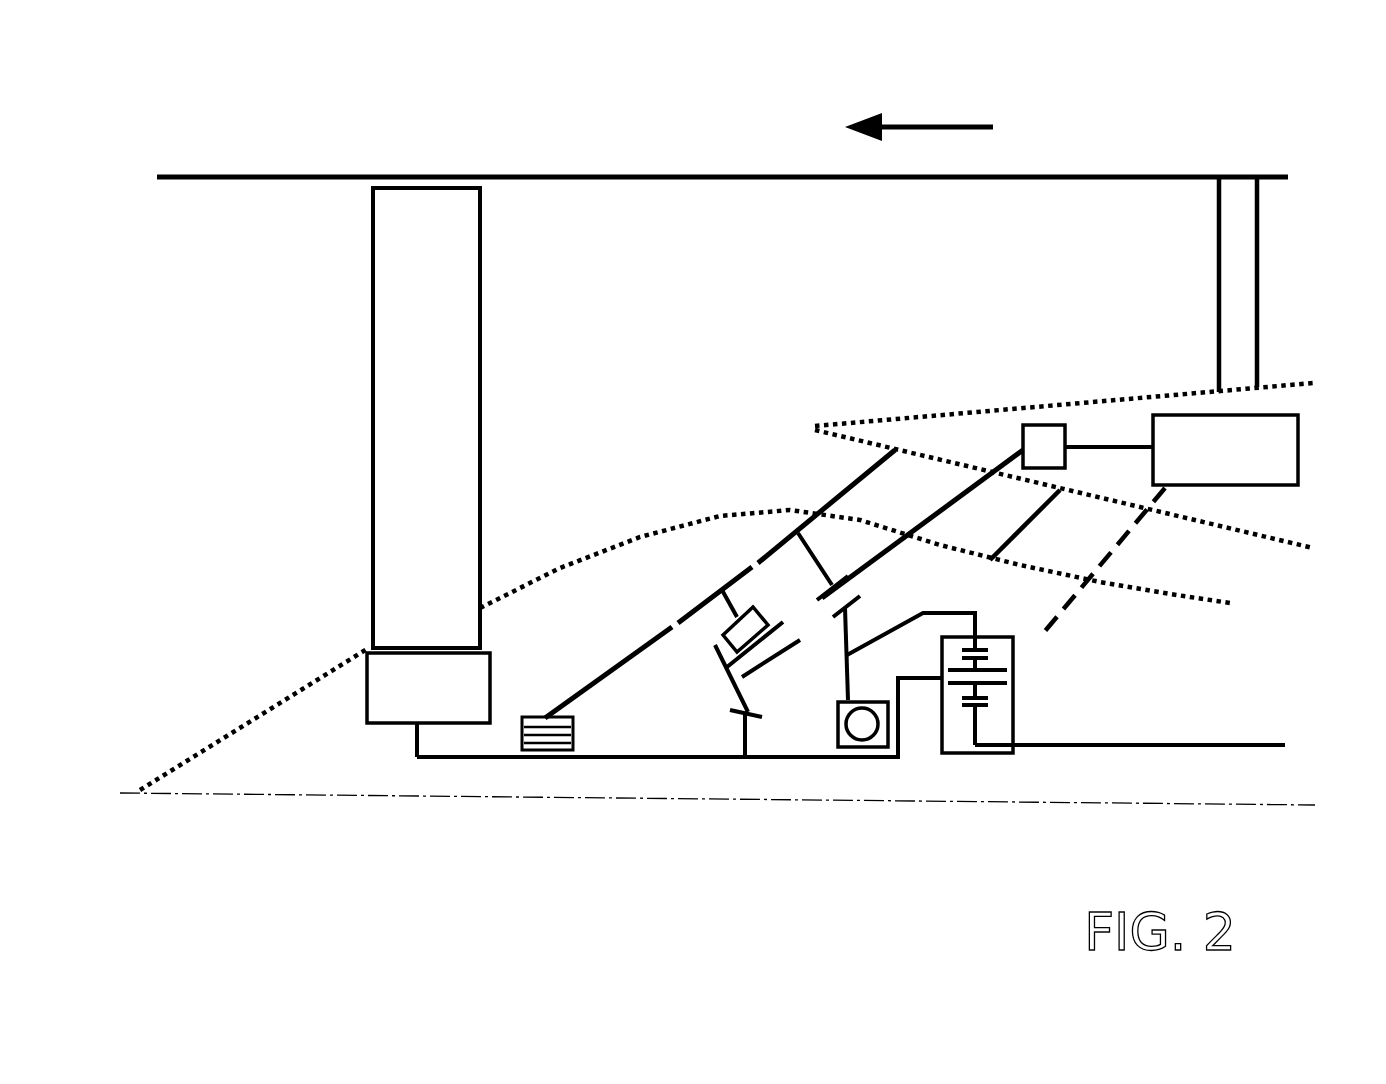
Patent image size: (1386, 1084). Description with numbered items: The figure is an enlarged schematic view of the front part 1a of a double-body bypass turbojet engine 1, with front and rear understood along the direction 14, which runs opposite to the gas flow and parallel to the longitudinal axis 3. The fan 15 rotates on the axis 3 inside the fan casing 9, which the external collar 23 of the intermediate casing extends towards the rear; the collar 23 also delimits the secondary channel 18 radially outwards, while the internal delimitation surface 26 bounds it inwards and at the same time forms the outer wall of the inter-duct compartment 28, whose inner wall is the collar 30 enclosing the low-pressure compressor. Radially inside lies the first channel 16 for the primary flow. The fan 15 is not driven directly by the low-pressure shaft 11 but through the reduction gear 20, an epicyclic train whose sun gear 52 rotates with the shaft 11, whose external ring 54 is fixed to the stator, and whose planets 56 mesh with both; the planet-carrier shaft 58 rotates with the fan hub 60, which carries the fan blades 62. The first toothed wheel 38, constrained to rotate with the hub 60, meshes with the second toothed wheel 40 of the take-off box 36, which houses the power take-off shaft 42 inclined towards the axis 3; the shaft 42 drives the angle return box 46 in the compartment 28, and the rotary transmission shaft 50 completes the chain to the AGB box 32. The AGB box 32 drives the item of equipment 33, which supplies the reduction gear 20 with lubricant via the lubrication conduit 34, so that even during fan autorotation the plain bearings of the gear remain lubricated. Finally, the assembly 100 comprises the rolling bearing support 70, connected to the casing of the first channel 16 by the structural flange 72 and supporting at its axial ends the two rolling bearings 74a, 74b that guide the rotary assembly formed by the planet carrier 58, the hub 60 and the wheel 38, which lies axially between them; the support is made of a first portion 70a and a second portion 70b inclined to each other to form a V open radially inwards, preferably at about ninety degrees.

The turbojet engine 1 is at (419, 145).
The front part of the turbojet engine 1a is at (658, 146).
The longitudinal axis 3 is at (213, 797).
The fan casing 9 is at (290, 173).
The low-pressure shaft 11 is at (1218, 748).
The direction 14 is at (913, 122).
The fan 15 is at (358, 440).
The first channel 16 is at (1197, 571).
The secondary channel 18 is at (1085, 269).
The reduction gear 20 is at (969, 765).
The external collar 23 is at (1188, 175).
The internal delimitation surface 26 is at (1292, 383).
The inter-duct compartment 28 is at (1223, 425).
The collar 30 is at (1232, 527).
The AGB box 32 is at (1223, 405).
The item of equipment 33 is at (1202, 415).
The lubrication conduit 34 is at (1117, 558).
The take-off box 36 is at (718, 690).
The first toothed wheel 38 is at (757, 748).
The second toothed wheel 40 is at (712, 662).
The mechanical power take-off shaft 42 is at (935, 505).
The angle return box 46 is at (1038, 427).
The rotary transmission shaft 50 is at (1098, 445).
The sun gear 52 is at (1048, 748).
The external ring 54 is at (977, 618).
The planets 56 is at (977, 687).
The planet-carrier shaft 58 is at (863, 763).
The fan hub 60 is at (437, 760).
The fan blades 62 is at (400, 262).
The rolling bearing support 70 is at (705, 590).
The first portion 70a is at (654, 619).
The second portion 70b is at (815, 557).
The structural flange 72 is at (800, 530).
The rolling bearing 74a is at (530, 752).
The rolling bearing 74b is at (887, 760).
The assembly 100 is at (627, 503).